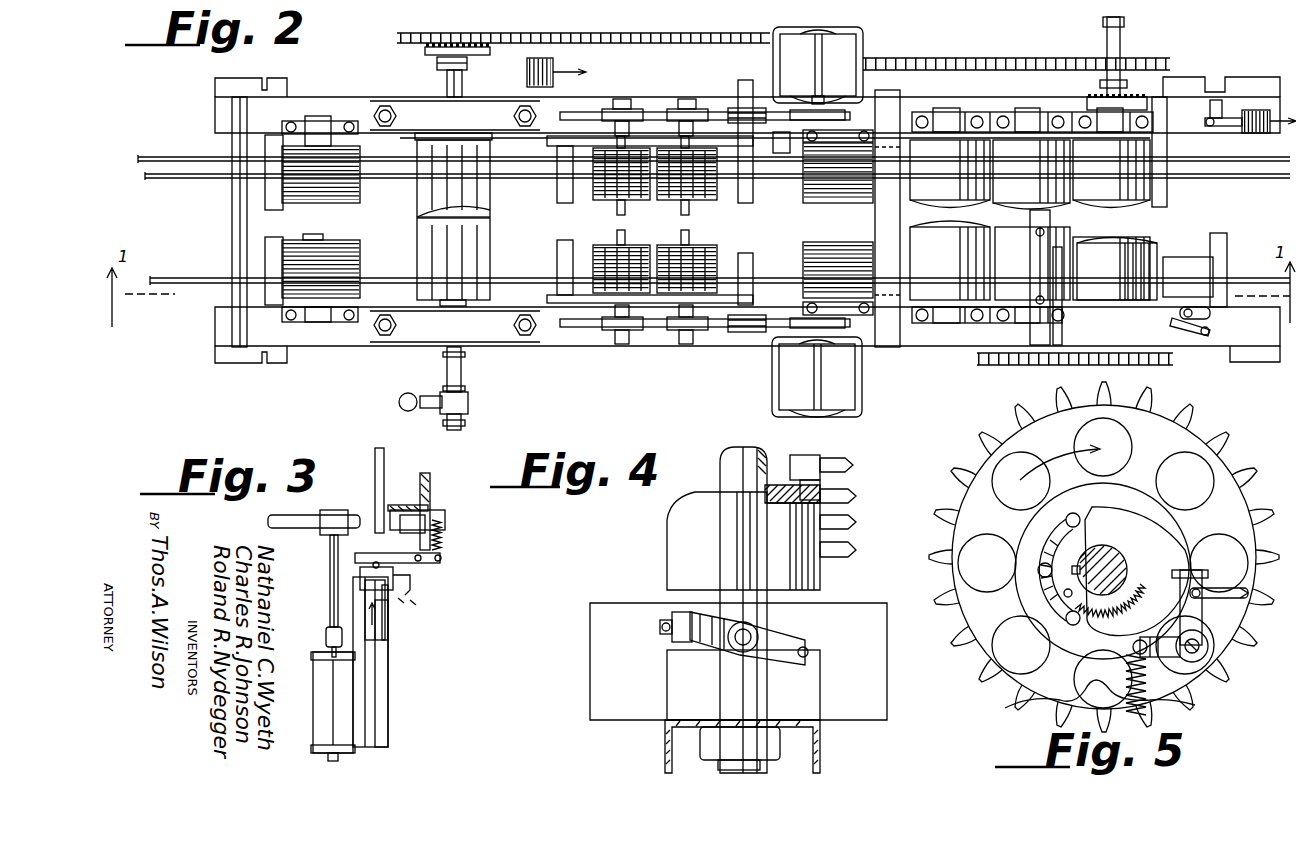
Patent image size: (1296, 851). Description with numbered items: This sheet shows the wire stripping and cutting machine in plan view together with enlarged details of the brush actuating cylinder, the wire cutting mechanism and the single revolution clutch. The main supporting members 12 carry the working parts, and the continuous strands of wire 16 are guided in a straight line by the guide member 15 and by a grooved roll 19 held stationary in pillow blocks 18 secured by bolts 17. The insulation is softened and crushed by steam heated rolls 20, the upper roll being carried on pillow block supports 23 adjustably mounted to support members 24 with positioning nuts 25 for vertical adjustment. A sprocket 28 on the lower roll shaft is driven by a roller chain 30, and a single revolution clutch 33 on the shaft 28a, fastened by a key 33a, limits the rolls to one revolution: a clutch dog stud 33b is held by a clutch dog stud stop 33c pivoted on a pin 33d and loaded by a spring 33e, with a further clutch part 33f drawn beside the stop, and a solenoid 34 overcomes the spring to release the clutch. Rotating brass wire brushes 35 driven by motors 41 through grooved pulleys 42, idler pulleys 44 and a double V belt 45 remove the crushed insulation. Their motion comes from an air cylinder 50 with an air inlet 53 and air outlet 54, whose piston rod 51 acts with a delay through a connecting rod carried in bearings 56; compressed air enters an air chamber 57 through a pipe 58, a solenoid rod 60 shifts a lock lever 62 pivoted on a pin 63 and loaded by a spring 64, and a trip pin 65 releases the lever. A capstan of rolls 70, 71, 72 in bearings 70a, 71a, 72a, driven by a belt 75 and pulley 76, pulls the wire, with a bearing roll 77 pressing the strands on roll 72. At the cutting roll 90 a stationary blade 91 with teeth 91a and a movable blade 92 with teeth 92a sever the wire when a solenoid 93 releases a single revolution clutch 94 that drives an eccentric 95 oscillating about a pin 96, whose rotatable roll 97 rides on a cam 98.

In FIG. 2, the main supporting member 12 is at (368, 98).
In FIG. 2, the guide member 15 is at (232, 250).
In FIG. 2, the continuous strands of wire 16 is at (178, 157).
In FIG. 2, the bolt 17 is at (290, 123).
In FIG. 2, the pillow block 18 is at (318, 116).
In FIG. 2, the grooved roll 19 is at (300, 240).
In FIG. 2, the steam heated roll 20 is at (420, 197).
In FIG. 2, the pillow block support 23 is at (410, 101).
In FIG. 2, the pillow block support member 24 is at (378, 332).
In FIG. 2, the positioning nut 25 is at (386, 335).
In FIG. 2, the sprocket 28 is at (440, 47).
In FIG. 5, the sprocket 28 is at (1228, 478).
In FIG. 2, the shaft 28a is at (450, 85).
In FIG. 5, the shaft 28a is at (1122, 552).
In FIG. 2, the roller chain 30 is at (580, 33).
In FIG. 2, the single revolution clutch 33 is at (437, 62).
In FIG. 5, the key 33a is at (1092, 557).
In FIG. 5, the clutch dog stud 33b is at (1174, 552).
In FIG. 5, the clutch dog stud stop 33c is at (1202, 578).
In FIG. 5, the pin 33d is at (1198, 652).
In FIG. 5, the spring 33e is at (1126, 695).
In FIG. 5, the pin 33f is at (1212, 598).
In FIG. 2, the solenoid 34 is at (553, 60).
In FIG. 2, the rotating brass wire brush 35 is at (608, 200).
In FIG. 2, the motor 41 is at (820, 30).
In FIG. 2, the grooved pulley 42 is at (685, 100).
In FIG. 2, the idler pulley 44 is at (730, 108).
In FIG. 2, the double V belt 45 is at (790, 110).
In FIG. 3, the air cylinder 50 is at (313, 688).
In FIG. 3, the piston rod 51 is at (330, 597).
In FIG. 3, the air inlet 53 is at (376, 652).
In FIG. 3, the air outlet 54 is at (388, 717).
In FIG. 3, the bearing 56 is at (388, 612).
In FIG. 3, the air chamber 57 is at (388, 635).
In FIG. 3, the pipe 58 is at (413, 592).
In FIG. 3, the solenoid rod 60 is at (368, 575).
In FIG. 3, the lock lever 62 is at (441, 558).
In FIG. 3, the pin 63 is at (421, 561).
In FIG. 3, the spring 64 is at (441, 532).
In FIG. 3, the trip pin 65 is at (372, 565).
In FIG. 2, the roll 70 is at (920, 232).
In FIG. 2, the bearing 70a is at (940, 112).
In FIG. 2, the roll 71 is at (1000, 300).
In FIG. 2, the bearing 71a is at (1020, 112).
In FIG. 2, the roll 72 is at (1130, 237).
In FIG. 2, the bearing 72a is at (1097, 112).
In FIG. 2, the belt 75 is at (958, 58).
In FIG. 2, the pulley 76 is at (1135, 58).
In FIG. 2, the bearing roll 77 is at (1140, 262).
In FIG. 2, the cutting roll 90 is at (1215, 248).
In FIG. 4, the stationary blade 91 is at (790, 459).
In FIG. 4, the teeth 91a is at (848, 462).
In FIG. 4, the horizontal movable blade 92 is at (810, 480).
In FIG. 4, the teeth 92a is at (856, 497).
In FIG. 2, the solenoid 93 is at (1252, 110).
In FIG. 2, the single revolution clutch 94 is at (1220, 126).
In FIG. 2, the eccentric 95 is at (1212, 328).
In FIG. 4, the eccentric 95 is at (735, 652).
In FIG. 2, the pin 96 is at (1210, 313).
In FIG. 4, the pin 96 is at (745, 650).
In FIG. 4, the rotatable roll 97 is at (670, 638).
In FIG. 4, the cam 98 is at (667, 698).